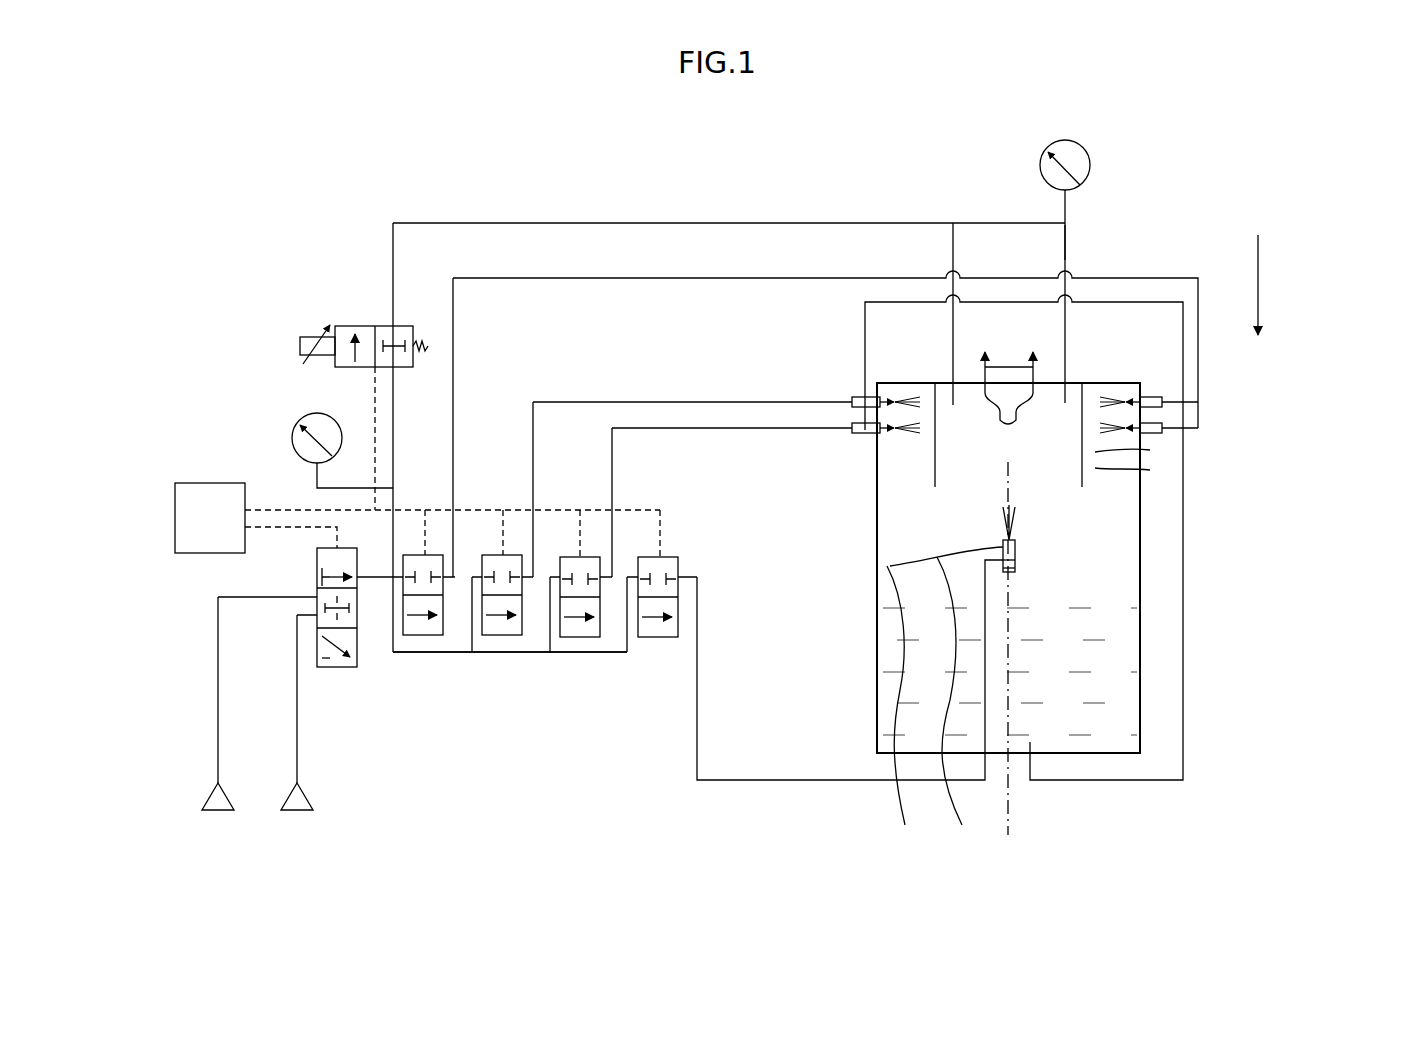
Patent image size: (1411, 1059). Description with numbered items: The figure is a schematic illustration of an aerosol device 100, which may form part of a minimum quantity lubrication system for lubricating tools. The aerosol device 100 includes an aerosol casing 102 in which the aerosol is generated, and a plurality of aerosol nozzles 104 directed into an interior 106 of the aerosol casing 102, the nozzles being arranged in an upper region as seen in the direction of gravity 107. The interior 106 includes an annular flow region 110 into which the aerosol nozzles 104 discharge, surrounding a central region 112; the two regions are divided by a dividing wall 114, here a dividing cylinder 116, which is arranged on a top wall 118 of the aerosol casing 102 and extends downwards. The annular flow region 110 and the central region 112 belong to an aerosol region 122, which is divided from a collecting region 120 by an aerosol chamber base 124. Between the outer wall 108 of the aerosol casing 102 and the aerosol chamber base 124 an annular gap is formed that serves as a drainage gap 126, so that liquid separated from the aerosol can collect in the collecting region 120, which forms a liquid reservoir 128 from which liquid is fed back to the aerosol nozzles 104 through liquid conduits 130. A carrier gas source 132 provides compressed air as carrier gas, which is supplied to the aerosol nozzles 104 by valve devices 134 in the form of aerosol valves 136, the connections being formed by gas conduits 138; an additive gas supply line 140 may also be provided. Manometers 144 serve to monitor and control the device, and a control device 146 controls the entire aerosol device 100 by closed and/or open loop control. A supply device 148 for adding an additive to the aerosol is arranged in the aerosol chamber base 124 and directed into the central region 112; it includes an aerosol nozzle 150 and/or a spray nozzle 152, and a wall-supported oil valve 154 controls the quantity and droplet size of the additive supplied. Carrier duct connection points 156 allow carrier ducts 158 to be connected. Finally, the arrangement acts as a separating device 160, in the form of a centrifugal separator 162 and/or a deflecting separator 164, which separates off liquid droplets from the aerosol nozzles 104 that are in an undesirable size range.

The aerosol device 100 is at (1227, 198).
The aerosol casing 102 is at (877, 617).
The aerosol nozzles 104 is at (854, 425).
The interior 106 is at (1070, 420).
The direction of gravity 107 is at (1258, 280).
The outer wall 108 is at (877, 627).
The annular flow region 110 is at (900, 453).
The central region 112 is at (993, 492).
The dividing wall 114 is at (1095, 452).
The dividing cylinder 116 is at (1095, 468).
The top wall 118 is at (930, 383).
The collecting region 120 is at (1120, 690).
The aerosol region 122 is at (905, 488).
The aerosol chamber base 124 is at (960, 707).
The drainage gap 126 is at (905, 712).
The liquid reservoir 128 is at (1120, 714).
The liquid conduits 130 is at (1175, 665).
The carrier gas source 132 is at (226, 814).
The valve devices 134 is at (417, 627).
The aerosol valves 136 is at (457, 665).
The gas conduits 138 is at (680, 278).
The additive gas supply line 140 is at (1065, 240).
The manometers 144 is at (1090, 162).
The control device 146 is at (175, 502).
The supply device 148 is at (1018, 553).
The aerosol nozzle 150 is at (1019, 560).
The spray nozzle 152 is at (1020, 567).
The wall-supported oil valve 154 is at (658, 650).
The carrier duct connection points 156 is at (1006, 367).
The carrier ducts 158 is at (1008, 633).
The separating device 160 is at (1057, 500).
The centrifugal separator 162 is at (1060, 537).
The deflecting separator 164 is at (1060, 537).